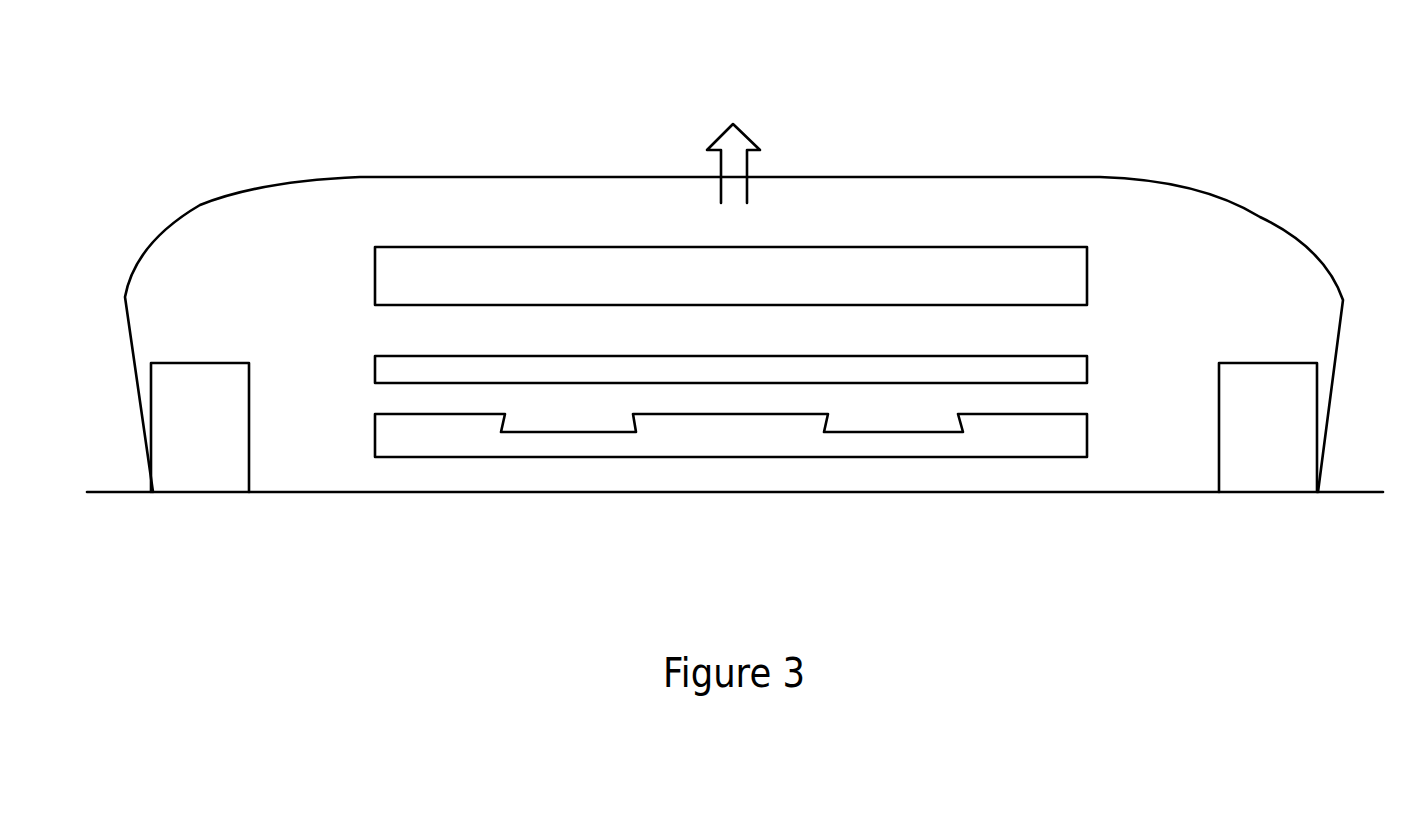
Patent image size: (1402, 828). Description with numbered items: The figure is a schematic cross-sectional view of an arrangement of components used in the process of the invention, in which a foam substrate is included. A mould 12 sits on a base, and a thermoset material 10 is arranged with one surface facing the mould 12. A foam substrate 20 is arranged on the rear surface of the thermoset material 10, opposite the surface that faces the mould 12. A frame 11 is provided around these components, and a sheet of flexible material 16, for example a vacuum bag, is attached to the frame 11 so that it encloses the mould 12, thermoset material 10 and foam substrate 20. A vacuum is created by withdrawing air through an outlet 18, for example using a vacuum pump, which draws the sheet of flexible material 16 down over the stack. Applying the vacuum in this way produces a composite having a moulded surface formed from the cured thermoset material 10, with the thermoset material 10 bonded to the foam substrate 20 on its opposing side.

The thermoset material 10 is at (1035, 368).
The frame 11 is at (195, 447).
The mould 12 is at (737, 440).
The sheet of flexible material 16 is at (538, 177).
The outlet 18 is at (752, 132).
The foam substrate 20 is at (928, 273).